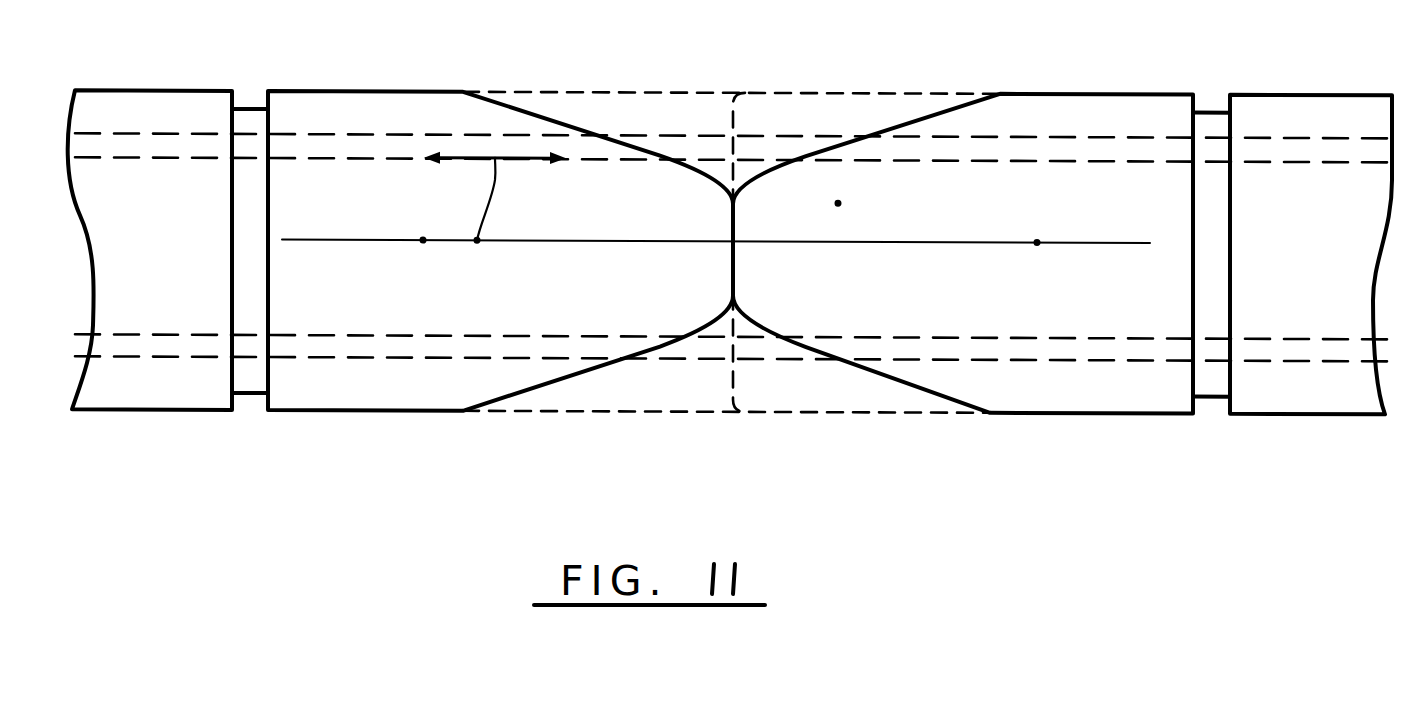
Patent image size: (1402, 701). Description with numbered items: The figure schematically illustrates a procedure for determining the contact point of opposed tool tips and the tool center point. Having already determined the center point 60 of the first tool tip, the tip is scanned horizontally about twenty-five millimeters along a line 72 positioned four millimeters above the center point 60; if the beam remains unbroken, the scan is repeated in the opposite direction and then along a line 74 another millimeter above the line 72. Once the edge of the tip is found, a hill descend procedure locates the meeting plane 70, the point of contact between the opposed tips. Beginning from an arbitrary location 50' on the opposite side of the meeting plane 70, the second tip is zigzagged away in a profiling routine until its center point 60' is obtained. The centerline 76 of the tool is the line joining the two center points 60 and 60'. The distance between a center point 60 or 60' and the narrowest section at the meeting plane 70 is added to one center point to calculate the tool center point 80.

The line 74 is at (330, 133).
The line 72 is at (320, 157).
The meeting plane 70 is at (737, 98).
The centerline 76 is at (398, 238).
The tool center point 80 is at (732, 240).
The center point 60 is at (493, 229).
The arbitrary location 50' is at (870, 195).
The center point 60' is at (1019, 270).